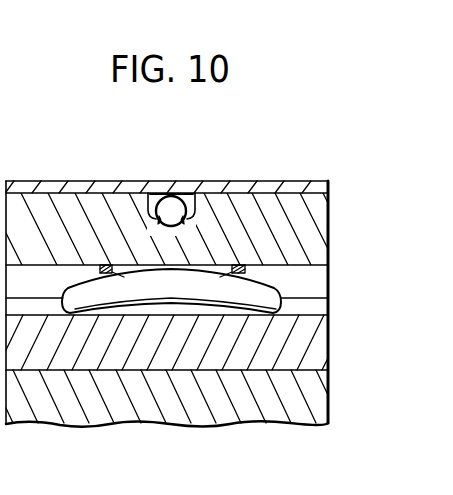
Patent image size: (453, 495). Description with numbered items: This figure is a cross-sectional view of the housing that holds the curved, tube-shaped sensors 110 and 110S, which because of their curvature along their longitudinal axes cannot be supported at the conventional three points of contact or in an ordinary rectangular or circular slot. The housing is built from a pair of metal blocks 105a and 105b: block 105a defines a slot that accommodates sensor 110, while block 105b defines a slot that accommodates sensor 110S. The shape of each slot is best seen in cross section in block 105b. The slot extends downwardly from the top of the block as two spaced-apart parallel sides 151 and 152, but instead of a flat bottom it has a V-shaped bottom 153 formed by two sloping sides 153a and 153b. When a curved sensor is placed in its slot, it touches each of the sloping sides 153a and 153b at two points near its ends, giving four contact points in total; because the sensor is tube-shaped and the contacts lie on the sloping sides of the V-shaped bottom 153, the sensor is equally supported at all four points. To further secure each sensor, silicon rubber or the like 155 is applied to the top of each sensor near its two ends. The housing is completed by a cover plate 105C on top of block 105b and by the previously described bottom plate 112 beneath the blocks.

The sensor 110S is at (163, 195).
The slot side 151 is at (153, 186).
The silicon rubber 155 is at (98, 269).
The slot side 152 is at (187, 190).
The cover plate 105C is at (302, 186).
The metal block 105b is at (342, 192).
The metal block 105a is at (342, 270).
The V-shaped bottom 153 is at (172, 229).
The sloping side 153a is at (157, 218).
The sloping side 153b is at (183, 222).
The sensor 110 is at (171, 314).
The bottom plate 112 is at (244, 406).